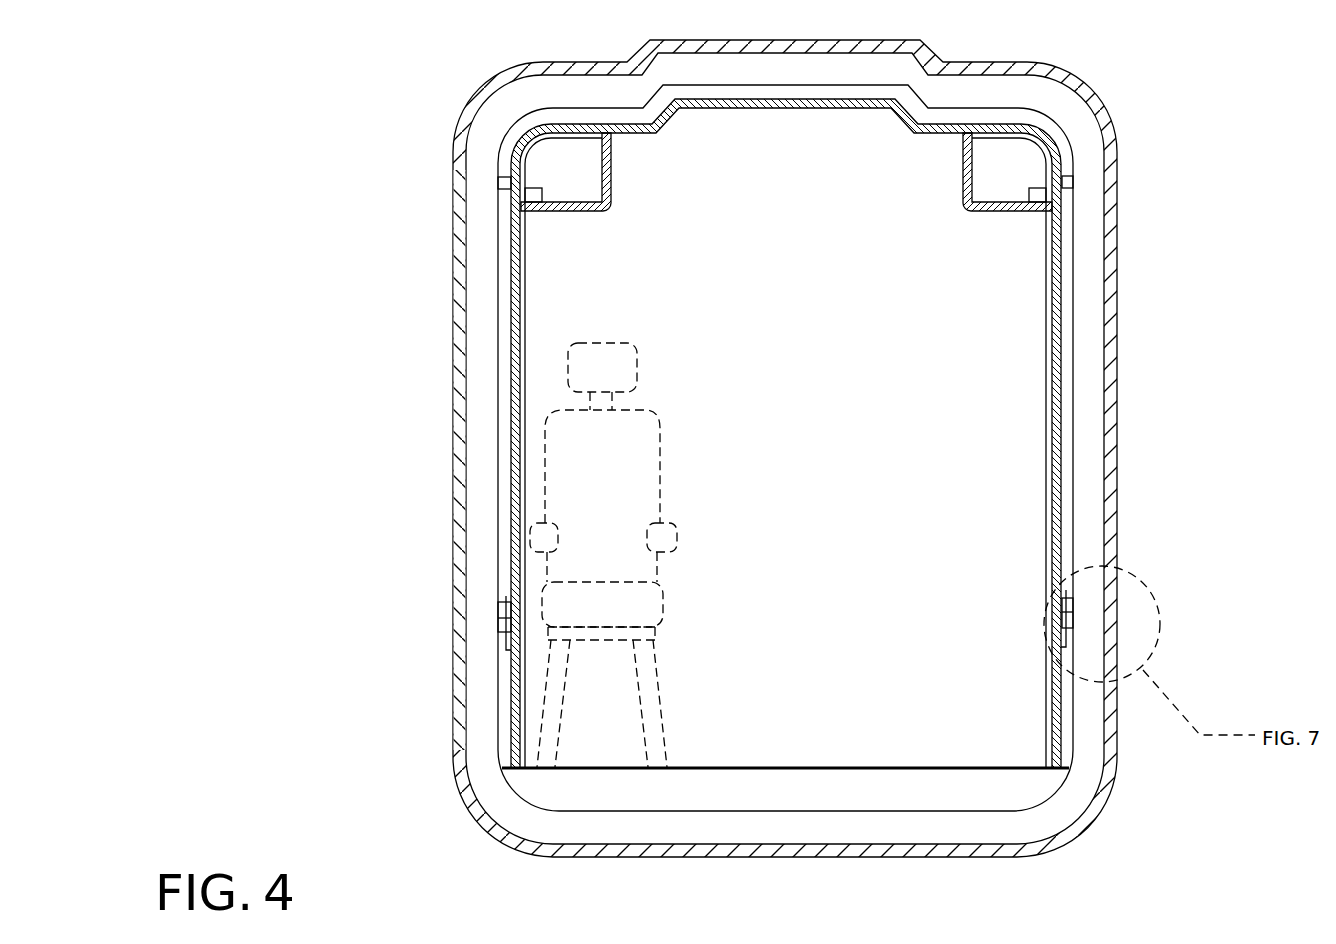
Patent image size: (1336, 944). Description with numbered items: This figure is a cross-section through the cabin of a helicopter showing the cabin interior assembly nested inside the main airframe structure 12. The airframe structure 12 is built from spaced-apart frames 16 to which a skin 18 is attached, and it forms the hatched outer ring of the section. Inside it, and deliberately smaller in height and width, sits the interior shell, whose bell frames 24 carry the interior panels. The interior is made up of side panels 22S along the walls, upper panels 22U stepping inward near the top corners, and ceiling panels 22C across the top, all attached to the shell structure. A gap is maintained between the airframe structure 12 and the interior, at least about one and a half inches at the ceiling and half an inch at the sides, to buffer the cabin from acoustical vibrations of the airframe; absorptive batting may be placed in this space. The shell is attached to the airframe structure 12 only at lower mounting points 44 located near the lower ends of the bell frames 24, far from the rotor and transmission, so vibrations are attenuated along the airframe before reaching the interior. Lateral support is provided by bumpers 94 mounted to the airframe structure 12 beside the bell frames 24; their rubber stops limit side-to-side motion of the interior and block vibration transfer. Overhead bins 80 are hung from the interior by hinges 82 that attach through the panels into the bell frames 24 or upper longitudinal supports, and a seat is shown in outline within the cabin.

The main airframe structure 12 is at (1125, 280).
The frames 16 is at (1090, 490).
The skin 18 is at (1118, 398).
The bell frames 24 is at (1057, 349).
The side panels 22S is at (521, 273).
The ceiling panels 22C is at (702, 110).
The upper panels 22U is at (963, 183).
The mounting points 44 is at (475, 620).
The overhead bins 80 is at (611, 208).
The hinges 82 is at (535, 195).
The bumpers 94 is at (497, 181).